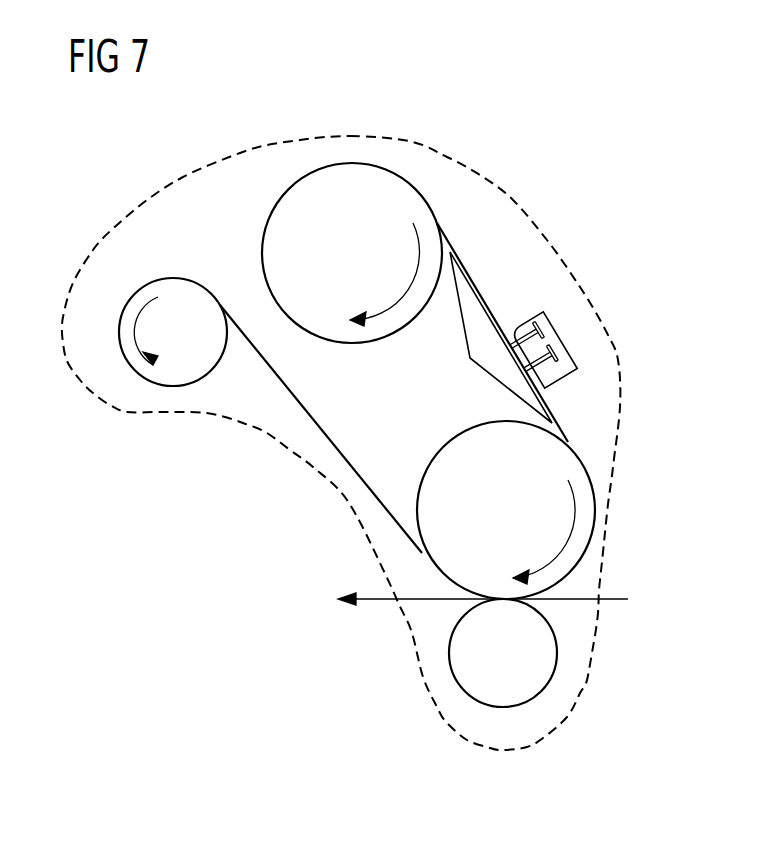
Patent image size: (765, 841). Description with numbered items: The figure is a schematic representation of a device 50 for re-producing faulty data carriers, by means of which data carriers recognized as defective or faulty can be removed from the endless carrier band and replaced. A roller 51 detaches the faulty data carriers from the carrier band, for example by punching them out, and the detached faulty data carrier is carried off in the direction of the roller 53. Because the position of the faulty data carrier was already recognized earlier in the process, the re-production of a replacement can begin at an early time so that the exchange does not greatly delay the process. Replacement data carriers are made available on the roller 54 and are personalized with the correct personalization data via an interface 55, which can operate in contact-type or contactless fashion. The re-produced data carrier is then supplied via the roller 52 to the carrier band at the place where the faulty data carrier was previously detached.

The device for re-producing faulty data carriers 50 is at (263, 143).
The roller 51 is at (545, 660).
The roller 52 is at (440, 465).
The roller 53 is at (172, 288).
The roller 54 is at (275, 243).
The interface 55 is at (553, 375).